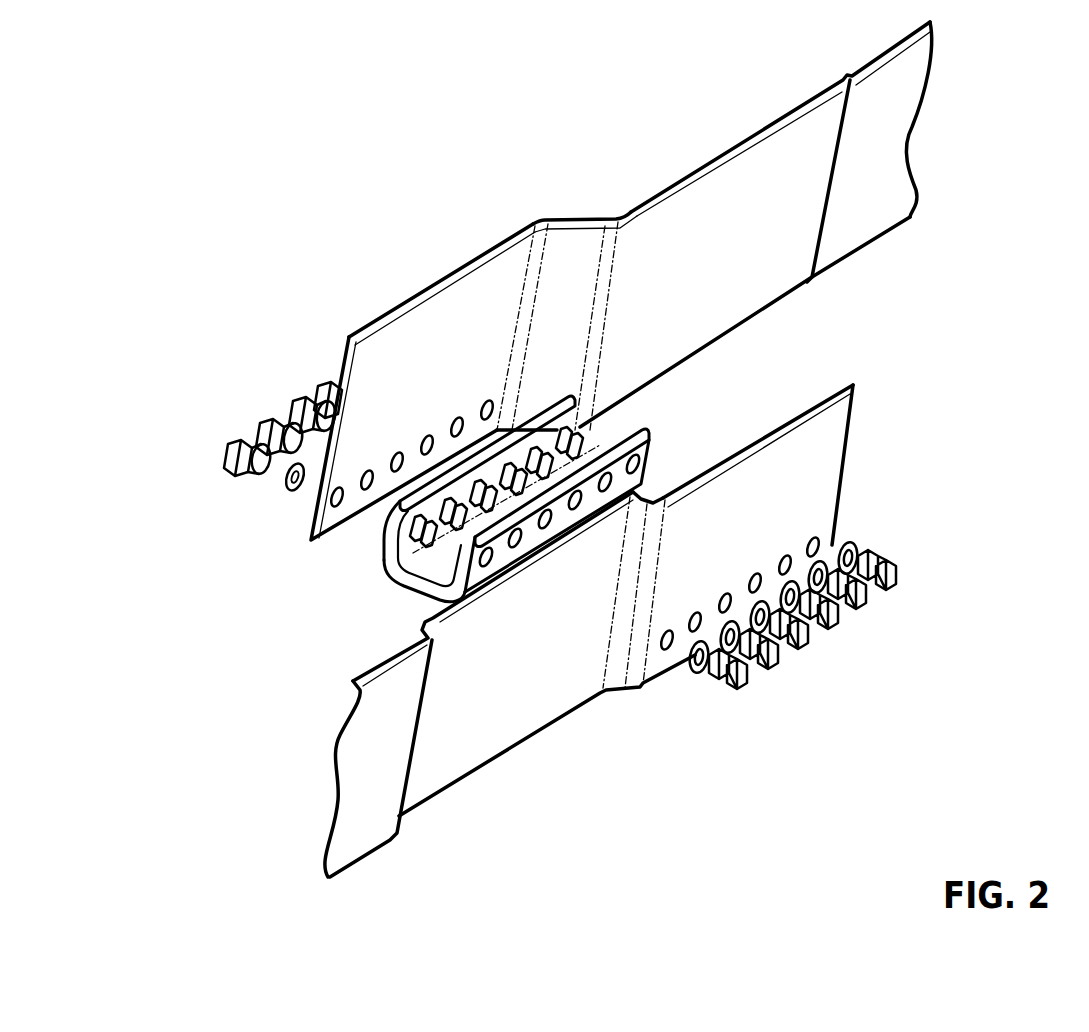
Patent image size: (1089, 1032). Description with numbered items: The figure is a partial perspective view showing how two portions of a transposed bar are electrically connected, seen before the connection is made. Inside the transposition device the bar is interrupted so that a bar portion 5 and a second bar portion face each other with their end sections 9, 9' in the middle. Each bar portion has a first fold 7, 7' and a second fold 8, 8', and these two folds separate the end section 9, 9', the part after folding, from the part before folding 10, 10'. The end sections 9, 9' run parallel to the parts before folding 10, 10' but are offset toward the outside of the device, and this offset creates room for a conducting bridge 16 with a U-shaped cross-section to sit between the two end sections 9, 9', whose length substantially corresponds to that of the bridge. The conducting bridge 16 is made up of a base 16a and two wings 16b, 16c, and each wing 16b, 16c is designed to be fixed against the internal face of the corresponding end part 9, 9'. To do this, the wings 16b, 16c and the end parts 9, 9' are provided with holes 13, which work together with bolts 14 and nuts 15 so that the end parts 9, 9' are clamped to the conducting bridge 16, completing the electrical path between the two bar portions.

The bar portion 5 is at (645, 687).
The first fold 7 is at (758, 446).
The second fold 8 is at (609, 654).
The end section 9 is at (795, 513).
The part before folding 10 is at (479, 700).
The first fold 7' is at (423, 349).
The second fold 8' is at (567, 293).
The end section 9' is at (227, 515).
The part before folding 10' is at (766, 224).
The holes 13 is at (594, 448).
The bolts 14 is at (228, 462).
The nuts 15 is at (400, 504).
The conducting bridge 16 is at (651, 430).
The base 16a is at (399, 580).
The wing 16b is at (384, 542).
The wing 16c is at (648, 468).